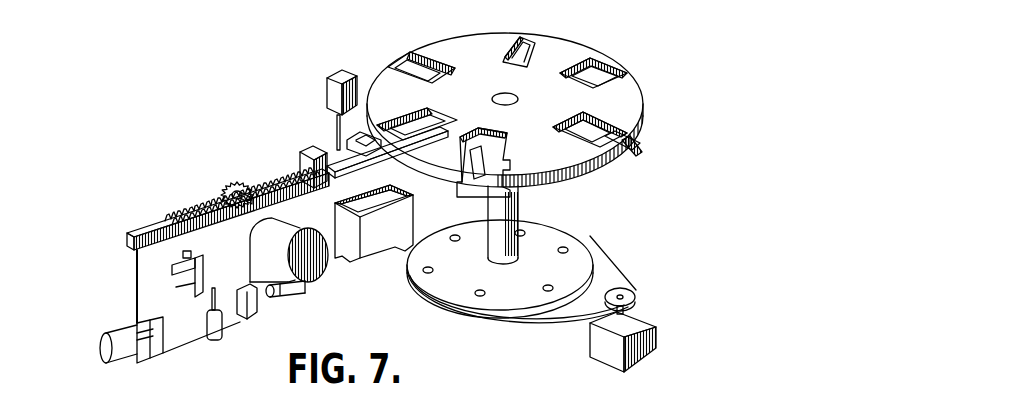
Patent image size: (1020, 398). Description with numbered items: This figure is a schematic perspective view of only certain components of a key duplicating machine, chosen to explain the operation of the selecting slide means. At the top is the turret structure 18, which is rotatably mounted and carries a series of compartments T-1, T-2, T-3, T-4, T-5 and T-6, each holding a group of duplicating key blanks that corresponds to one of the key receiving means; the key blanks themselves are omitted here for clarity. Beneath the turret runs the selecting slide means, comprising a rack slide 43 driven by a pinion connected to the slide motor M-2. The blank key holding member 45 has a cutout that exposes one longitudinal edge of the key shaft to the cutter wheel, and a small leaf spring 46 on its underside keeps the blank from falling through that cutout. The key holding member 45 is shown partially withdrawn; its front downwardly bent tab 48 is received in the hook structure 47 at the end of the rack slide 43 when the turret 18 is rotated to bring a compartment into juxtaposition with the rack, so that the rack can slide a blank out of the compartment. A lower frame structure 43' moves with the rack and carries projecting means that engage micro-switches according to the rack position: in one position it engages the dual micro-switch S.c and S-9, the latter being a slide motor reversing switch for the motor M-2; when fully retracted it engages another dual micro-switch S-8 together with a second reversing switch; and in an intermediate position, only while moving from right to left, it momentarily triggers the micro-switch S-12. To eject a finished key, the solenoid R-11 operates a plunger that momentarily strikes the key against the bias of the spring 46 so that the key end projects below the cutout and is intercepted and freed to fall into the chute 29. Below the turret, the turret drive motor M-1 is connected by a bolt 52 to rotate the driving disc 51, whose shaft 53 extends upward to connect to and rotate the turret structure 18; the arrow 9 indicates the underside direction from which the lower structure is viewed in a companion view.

The turret structure 18 is at (628, 95).
The compartment T-1 is at (422, 118).
The compartment T-2 is at (497, 134).
The compartment T-3 is at (633, 121).
The compartment T-4 is at (587, 65).
The compartment T-5 is at (522, 48).
The compartment T-6 is at (426, 46).
The blank key holding member 45 is at (405, 143).
The leaf spring 46 is at (337, 160).
The hook structure 47 is at (298, 172).
The downwardly bent tab 48 is at (306, 157).
The rack slide 43 is at (228, 183).
The lower frame structure 43' is at (178, 274).
The solenoid R-11 is at (329, 79).
The chute 29 is at (400, 208).
The slide motor M-2 is at (327, 263).
The micro-switch S.c is at (300, 286).
The slide motor reversing switch S-9 is at (49, 270).
The micro-switch S-8 is at (128, 338).
The micro-switch S-12 is at (215, 342).
The shaft 53 is at (506, 216).
The driving disc 51 is at (548, 238).
The bolt 52 is at (565, 312).
The direction arrow 9 is at (502, 332).
The turret drive motor M-1 is at (652, 323).